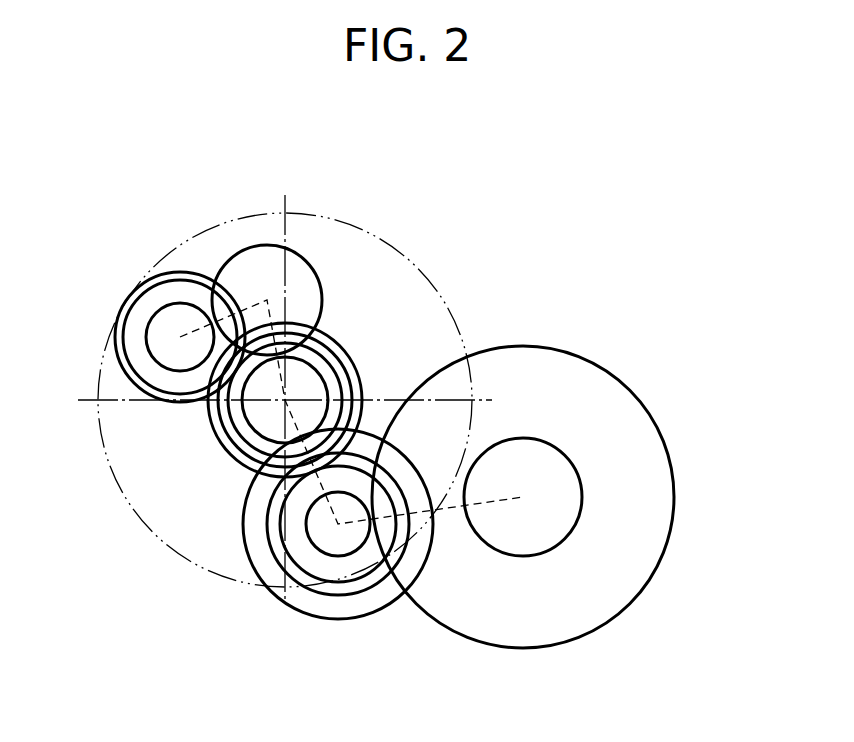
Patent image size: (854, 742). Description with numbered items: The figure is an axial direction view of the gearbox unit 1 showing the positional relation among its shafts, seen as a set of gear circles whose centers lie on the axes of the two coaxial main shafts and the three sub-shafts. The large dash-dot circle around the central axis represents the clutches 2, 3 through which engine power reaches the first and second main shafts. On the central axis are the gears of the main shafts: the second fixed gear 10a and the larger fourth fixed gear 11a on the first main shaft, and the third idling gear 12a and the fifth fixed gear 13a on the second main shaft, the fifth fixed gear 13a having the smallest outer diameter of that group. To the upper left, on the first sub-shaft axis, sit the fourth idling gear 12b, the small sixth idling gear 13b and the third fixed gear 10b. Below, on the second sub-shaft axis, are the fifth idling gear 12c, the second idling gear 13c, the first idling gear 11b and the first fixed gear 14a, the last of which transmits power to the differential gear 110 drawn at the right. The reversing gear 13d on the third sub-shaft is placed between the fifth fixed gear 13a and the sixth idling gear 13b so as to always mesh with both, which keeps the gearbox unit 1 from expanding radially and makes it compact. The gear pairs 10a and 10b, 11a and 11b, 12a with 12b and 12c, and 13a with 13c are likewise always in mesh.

The gearbox unit 1 is at (129, 200).
The first clutch 2 is at (305, 391).
The second clutch 3 is at (397, 247).
The second fixed gear 10a is at (230, 440).
The third fixed gear 10b is at (116, 358).
The fourth fixed gear 11a is at (237, 463).
The first idling gear 11b is at (362, 580).
The third idling gear 12a is at (236, 428).
The fourth idling gear 12b is at (123, 327).
The fifth idling gear 12c is at (243, 543).
The fifth fixed gear 13a is at (255, 430).
The sixth idling gear 13b is at (162, 304).
The second idling gear 13c is at (292, 572).
The reversing gear 13d is at (244, 246).
The first fixed gear 14a is at (318, 550).
The differential gear 110 is at (670, 450).